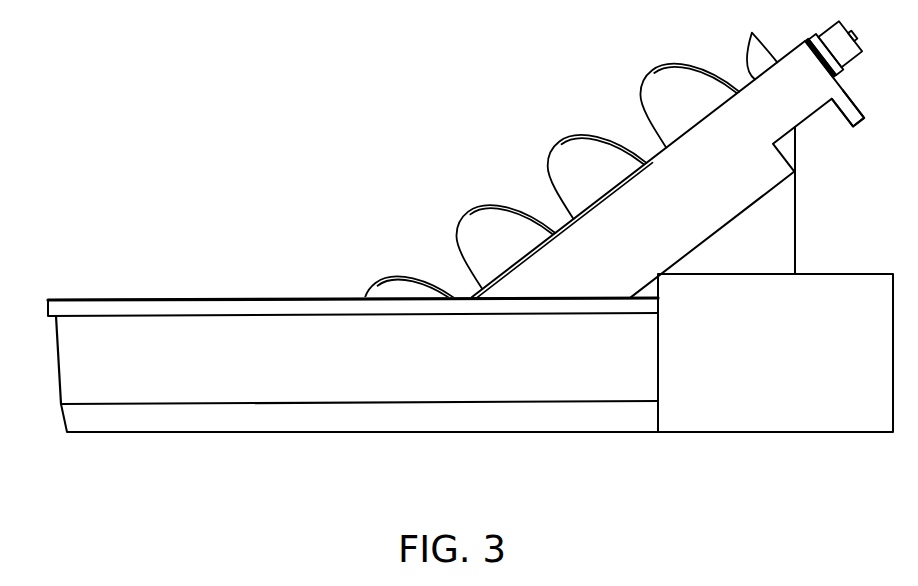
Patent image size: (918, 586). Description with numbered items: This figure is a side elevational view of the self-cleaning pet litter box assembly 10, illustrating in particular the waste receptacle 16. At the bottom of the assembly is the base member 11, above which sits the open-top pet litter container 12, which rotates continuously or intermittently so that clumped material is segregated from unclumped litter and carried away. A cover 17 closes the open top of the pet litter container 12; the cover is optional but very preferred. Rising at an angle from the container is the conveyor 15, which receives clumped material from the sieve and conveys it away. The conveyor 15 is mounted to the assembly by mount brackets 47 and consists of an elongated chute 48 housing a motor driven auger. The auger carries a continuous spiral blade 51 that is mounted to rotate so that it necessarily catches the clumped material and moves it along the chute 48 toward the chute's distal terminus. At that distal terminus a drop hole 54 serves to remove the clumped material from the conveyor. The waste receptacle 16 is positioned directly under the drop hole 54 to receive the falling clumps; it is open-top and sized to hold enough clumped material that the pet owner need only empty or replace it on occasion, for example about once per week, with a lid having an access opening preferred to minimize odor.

The self-cleaning pet litter box assembly 10 is at (456, 252).
The base member 11 is at (177, 429).
The open-top pet litter container 12 is at (62, 388).
The conveyor 15 is at (622, 190).
The waste receptacle 16 is at (758, 368).
The cover 17 is at (90, 305).
The mount brackets 47 is at (797, 222).
The elongated chute 48 is at (732, 212).
The continuous spiral blade 51 is at (470, 210).
The drop hole 54 is at (849, 125).